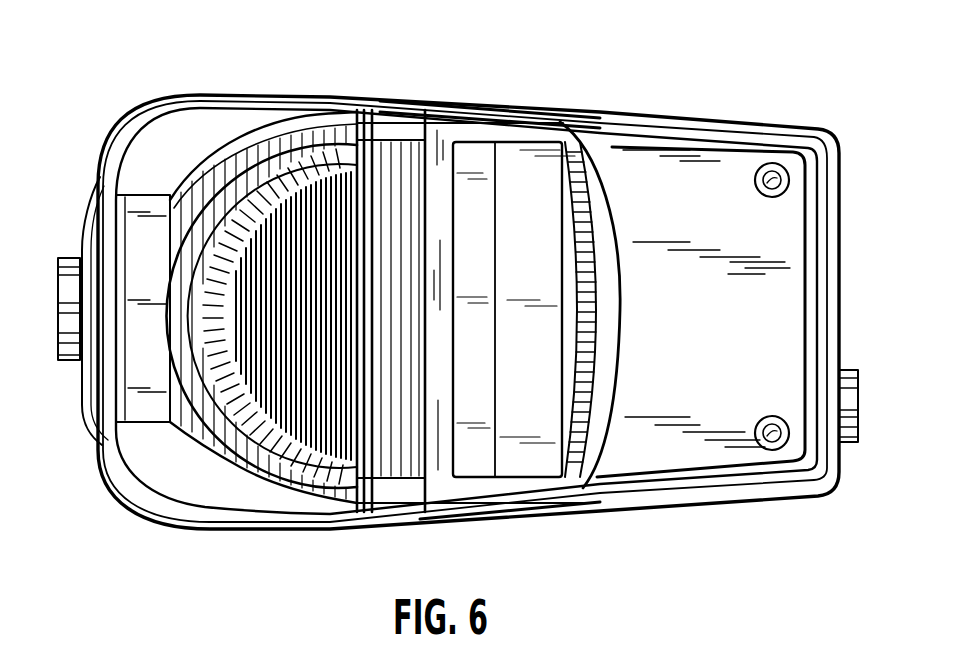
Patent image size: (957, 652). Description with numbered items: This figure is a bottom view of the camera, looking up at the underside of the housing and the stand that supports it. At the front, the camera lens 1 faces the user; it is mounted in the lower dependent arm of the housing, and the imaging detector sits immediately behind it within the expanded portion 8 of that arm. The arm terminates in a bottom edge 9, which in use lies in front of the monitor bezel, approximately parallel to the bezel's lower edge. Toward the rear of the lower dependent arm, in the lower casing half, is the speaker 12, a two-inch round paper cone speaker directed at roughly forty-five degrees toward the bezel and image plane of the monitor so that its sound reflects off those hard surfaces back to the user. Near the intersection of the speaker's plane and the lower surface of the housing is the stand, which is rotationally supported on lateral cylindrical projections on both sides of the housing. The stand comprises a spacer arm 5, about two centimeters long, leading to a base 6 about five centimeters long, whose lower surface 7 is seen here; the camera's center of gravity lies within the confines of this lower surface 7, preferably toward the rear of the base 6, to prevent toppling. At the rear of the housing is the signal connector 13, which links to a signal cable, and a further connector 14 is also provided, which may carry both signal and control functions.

The camera lens 1 is at (58, 317).
The spacer arm 5 is at (410, 138).
The base 6 is at (616, 216).
The lower surface 7 is at (603, 168).
The expanded portion 8 is at (90, 264).
The bottom edge 9 is at (124, 397).
The speaker 12 is at (322, 148).
The signal connector 13 is at (860, 417).
The connector 14 is at (733, 242).